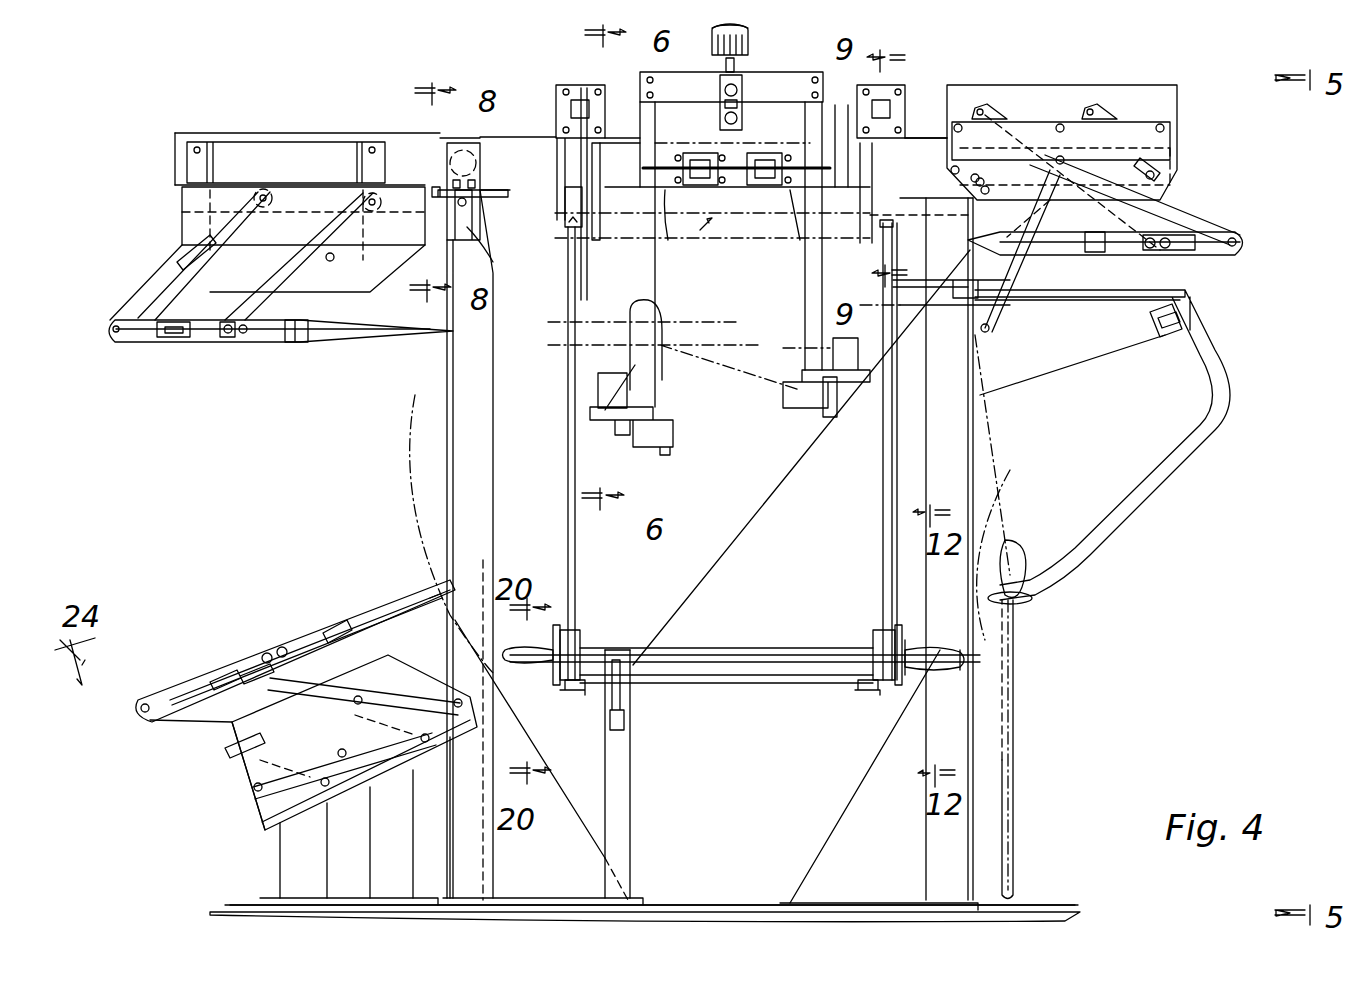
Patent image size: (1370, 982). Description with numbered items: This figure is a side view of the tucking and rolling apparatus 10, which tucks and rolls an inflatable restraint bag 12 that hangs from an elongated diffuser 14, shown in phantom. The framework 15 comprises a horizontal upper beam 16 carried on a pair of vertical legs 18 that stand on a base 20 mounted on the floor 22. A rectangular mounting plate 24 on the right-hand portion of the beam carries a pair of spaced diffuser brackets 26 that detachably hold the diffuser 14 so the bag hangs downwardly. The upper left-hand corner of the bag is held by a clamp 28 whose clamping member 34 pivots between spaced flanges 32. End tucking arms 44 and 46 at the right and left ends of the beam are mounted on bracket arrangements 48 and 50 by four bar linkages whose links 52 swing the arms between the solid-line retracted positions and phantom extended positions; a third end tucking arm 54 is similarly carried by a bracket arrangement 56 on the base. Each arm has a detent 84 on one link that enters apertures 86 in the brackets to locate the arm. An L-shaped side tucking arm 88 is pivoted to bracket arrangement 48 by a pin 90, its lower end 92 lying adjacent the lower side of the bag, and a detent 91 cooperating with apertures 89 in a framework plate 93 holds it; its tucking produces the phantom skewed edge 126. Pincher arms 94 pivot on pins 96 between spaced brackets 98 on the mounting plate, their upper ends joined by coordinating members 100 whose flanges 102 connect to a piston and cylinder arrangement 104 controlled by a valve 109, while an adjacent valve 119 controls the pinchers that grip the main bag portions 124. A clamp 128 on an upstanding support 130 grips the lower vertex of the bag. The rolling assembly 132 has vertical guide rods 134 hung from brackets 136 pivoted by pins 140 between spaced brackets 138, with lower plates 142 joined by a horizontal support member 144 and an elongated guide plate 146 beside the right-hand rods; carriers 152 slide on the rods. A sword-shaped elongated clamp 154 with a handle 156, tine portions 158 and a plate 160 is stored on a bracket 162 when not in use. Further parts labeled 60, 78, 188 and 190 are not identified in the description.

The tucking and rolling apparatus 10 is at (1105, 596).
The bag 12 is at (405, 418).
The diffuser 14 is at (710, 237).
The framework 15 is at (978, 80).
The horizontal upper beam 16 is at (522, 152).
The vertical legs 18 is at (480, 425).
The base 20 is at (707, 899).
The floor 22 is at (656, 910).
The mounting plate 24 is at (605, 85).
The diffuser brackets 26 is at (587, 195).
The clamp 28 is at (485, 216).
The spaced flanges 32 is at (455, 178).
The clamping member 34 is at (485, 235).
The end tucking arm 44 is at (1171, 258).
The end tucking arm 46 is at (277, 351).
The bracket arrangement 48 is at (1132, 109).
The bracket arrangement 50 is at (290, 151).
The links 52 is at (255, 297).
The third end tucking arm 54 is at (245, 642).
The bracket arrangement 56 is at (264, 807).
The tray bar 60 is at (370, 330).
The rod 78 is at (132, 343).
The detent 84 is at (180, 260).
The apertures 86 is at (330, 260).
The side tucking arm 88 is at (1228, 362).
The apertures 89 is at (990, 328).
The pin 90 is at (994, 173).
The detent 91 is at (1180, 326).
The lower end 92 is at (698, 322).
The plate 93 is at (1067, 363).
The pincher arms 94 is at (674, 288).
The pins 96 is at (795, 160).
The spaced brackets 98 is at (667, 240).
The coordinating members 100 is at (752, 90).
The flanges 102 is at (722, 62).
The piston and cylinder arrangement 104 is at (761, 46).
The valve 109 is at (687, 165).
The valve 119 is at (775, 176).
The main bag portion 124 is at (737, 535).
The skewed edge 126 is at (742, 503).
The clamp 128 is at (638, 707).
The upstanding support 130 is at (622, 780).
The rolling assembly 132 is at (559, 500).
The vertical guide rods 134 is at (566, 458).
The brackets 136 is at (570, 185).
The spaced brackets 138 is at (575, 84).
The pins 140 is at (595, 97).
The plates 142 is at (580, 695).
The horizontal support member 144 is at (753, 683).
The elongated guide plate 146 is at (903, 515).
The carrier 152 is at (575, 640).
The elongated clamp 154 is at (699, 621).
The handle 156 is at (1017, 545).
The tine portions 158 is at (727, 645).
The plate 160 is at (897, 623).
The bracket 162 is at (1010, 605).
The collar 188 is at (553, 645).
The handle 190 is at (522, 665).